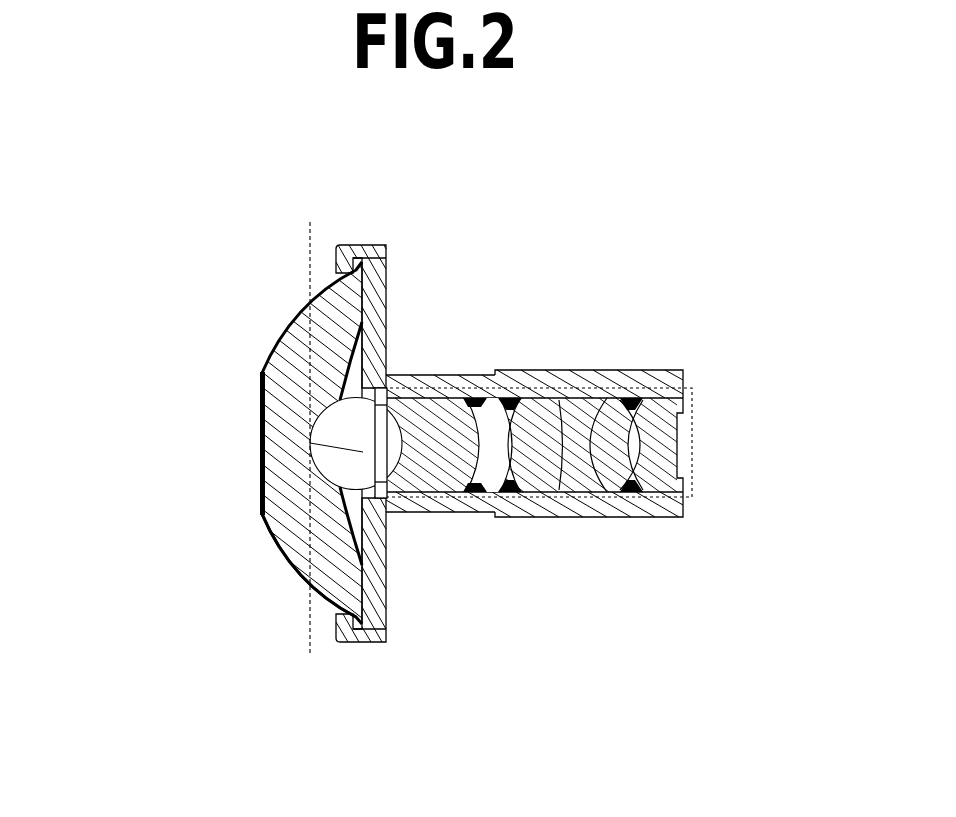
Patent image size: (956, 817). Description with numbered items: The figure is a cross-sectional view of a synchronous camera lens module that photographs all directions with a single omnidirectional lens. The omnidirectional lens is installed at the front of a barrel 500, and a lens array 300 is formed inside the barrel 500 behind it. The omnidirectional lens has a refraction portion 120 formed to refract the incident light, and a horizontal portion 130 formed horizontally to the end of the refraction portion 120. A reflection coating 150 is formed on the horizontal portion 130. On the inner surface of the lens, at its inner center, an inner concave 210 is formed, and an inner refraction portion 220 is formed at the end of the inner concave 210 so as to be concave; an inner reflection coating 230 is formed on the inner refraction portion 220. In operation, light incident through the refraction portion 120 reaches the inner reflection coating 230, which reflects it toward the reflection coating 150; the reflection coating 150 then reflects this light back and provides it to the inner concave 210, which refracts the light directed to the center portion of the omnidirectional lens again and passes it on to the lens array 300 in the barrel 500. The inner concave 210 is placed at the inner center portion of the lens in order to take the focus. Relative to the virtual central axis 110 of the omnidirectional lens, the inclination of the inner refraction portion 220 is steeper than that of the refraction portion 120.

The central axis 110 is at (309, 642).
The refraction portion 120 is at (280, 344).
The horizontal portion 130 is at (287, 542).
The reflection coating 150 is at (262, 480).
The inner concave 210 is at (437, 520).
The inner refraction portion 220 is at (348, 372).
The inner reflection coating 230 is at (427, 375).
The lens array 300 is at (690, 442).
The barrel 500 is at (630, 373).